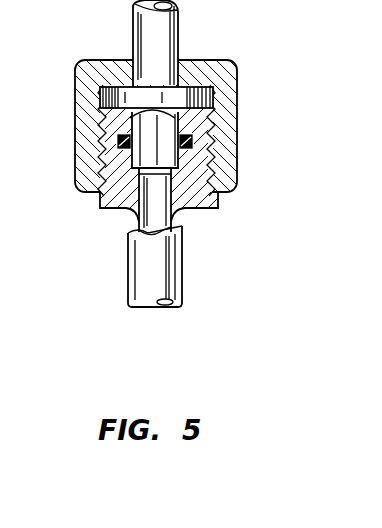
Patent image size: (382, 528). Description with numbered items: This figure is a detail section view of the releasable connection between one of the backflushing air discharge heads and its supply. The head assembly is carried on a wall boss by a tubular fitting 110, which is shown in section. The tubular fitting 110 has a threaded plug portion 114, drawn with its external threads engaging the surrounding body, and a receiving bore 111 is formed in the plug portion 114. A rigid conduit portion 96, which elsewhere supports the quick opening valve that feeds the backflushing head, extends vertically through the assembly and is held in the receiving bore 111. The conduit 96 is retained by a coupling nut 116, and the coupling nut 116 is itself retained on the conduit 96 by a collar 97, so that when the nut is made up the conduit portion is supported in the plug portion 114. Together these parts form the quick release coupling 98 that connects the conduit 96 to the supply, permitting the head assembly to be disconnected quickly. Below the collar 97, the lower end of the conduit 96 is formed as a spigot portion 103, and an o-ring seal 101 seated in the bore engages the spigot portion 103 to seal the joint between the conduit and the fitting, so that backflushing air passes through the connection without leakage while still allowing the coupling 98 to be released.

The rigid conduit portion 96 is at (178, 21).
The collar 97 is at (103, 101).
The quick release coupling 98 is at (237, 163).
The o-ring seal 101 is at (200, 138).
The spigot portion 103 is at (145, 148).
The tubular fitting 110 is at (130, 298).
The receiving bore 111 is at (127, 207).
The threaded plug portion 114 is at (110, 158).
The coupling nut 116 is at (237, 95).